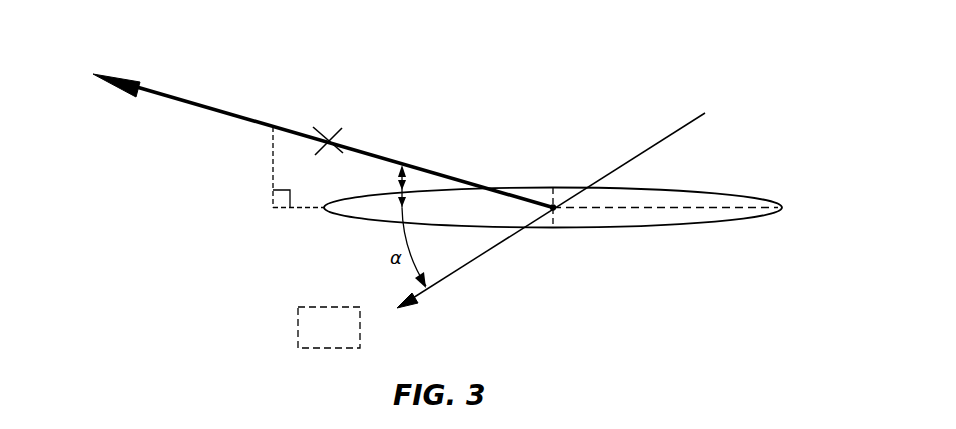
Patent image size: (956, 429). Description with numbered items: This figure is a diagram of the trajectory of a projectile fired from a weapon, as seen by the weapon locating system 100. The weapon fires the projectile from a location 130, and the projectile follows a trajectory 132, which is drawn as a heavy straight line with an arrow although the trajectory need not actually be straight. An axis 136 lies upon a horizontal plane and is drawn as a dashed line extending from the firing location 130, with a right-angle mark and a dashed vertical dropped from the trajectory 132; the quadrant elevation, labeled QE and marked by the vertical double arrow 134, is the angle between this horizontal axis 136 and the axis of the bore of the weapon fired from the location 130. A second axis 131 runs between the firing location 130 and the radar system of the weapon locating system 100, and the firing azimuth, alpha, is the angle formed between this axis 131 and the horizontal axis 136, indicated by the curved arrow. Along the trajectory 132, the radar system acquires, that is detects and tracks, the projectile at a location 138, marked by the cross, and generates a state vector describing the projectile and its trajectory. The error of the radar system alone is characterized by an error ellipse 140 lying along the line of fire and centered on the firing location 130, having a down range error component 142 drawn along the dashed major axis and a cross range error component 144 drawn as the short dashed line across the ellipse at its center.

The weapon locating system 100 is at (298, 328).
The location 130 is at (556, 214).
The axis 131 is at (460, 268).
The trajectory 132 is at (217, 106).
The elevation angle QE indicator 134 is at (410, 182).
The axis 136 is at (308, 209).
The location 138 is at (330, 128).
The error ellipse 140 is at (680, 187).
The down range error component 142 is at (688, 210).
The cross range error component 144 is at (550, 188).